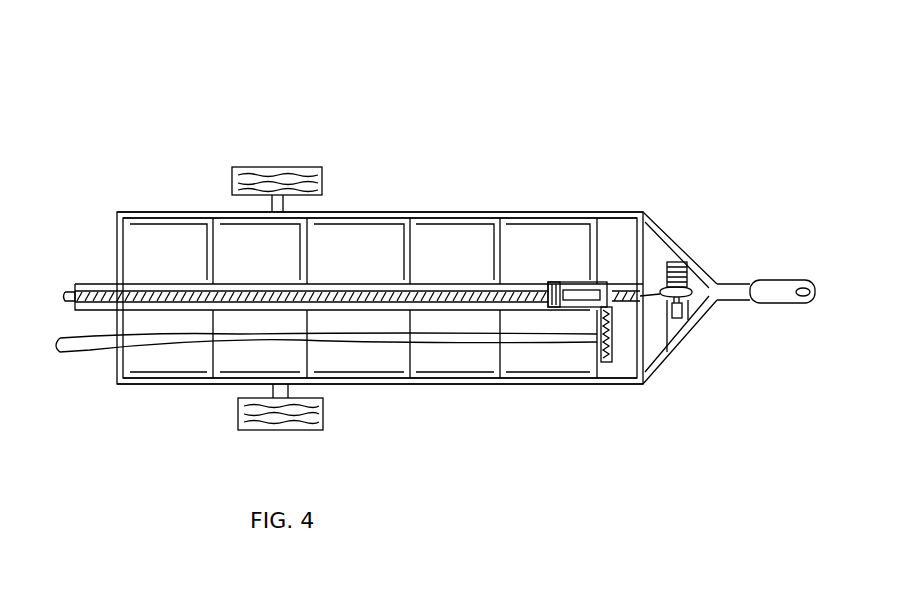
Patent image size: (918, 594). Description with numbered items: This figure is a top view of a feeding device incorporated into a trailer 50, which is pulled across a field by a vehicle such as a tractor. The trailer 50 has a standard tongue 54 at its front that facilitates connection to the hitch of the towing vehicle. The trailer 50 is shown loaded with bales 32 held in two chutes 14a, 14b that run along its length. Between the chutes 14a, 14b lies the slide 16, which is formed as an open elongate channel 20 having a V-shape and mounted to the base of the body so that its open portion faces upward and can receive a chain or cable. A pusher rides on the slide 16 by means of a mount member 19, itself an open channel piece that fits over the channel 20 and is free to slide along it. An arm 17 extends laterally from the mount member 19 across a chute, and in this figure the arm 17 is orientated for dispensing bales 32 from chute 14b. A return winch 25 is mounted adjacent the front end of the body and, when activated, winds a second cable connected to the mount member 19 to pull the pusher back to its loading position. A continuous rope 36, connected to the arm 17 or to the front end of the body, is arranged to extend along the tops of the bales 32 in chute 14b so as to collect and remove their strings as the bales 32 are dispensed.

The trailer 50 is at (592, 143).
The slide 16 is at (86, 286).
The elongate channel 20 is at (98, 290).
The bales 32 is at (448, 238).
The mount member 19 is at (578, 283).
The chute 14a is at (613, 226).
The chute 14b is at (622, 352).
The return winch 25 is at (676, 262).
The tongue 54 is at (768, 283).
The arm 17 is at (612, 332).
The rope 36 is at (78, 356).